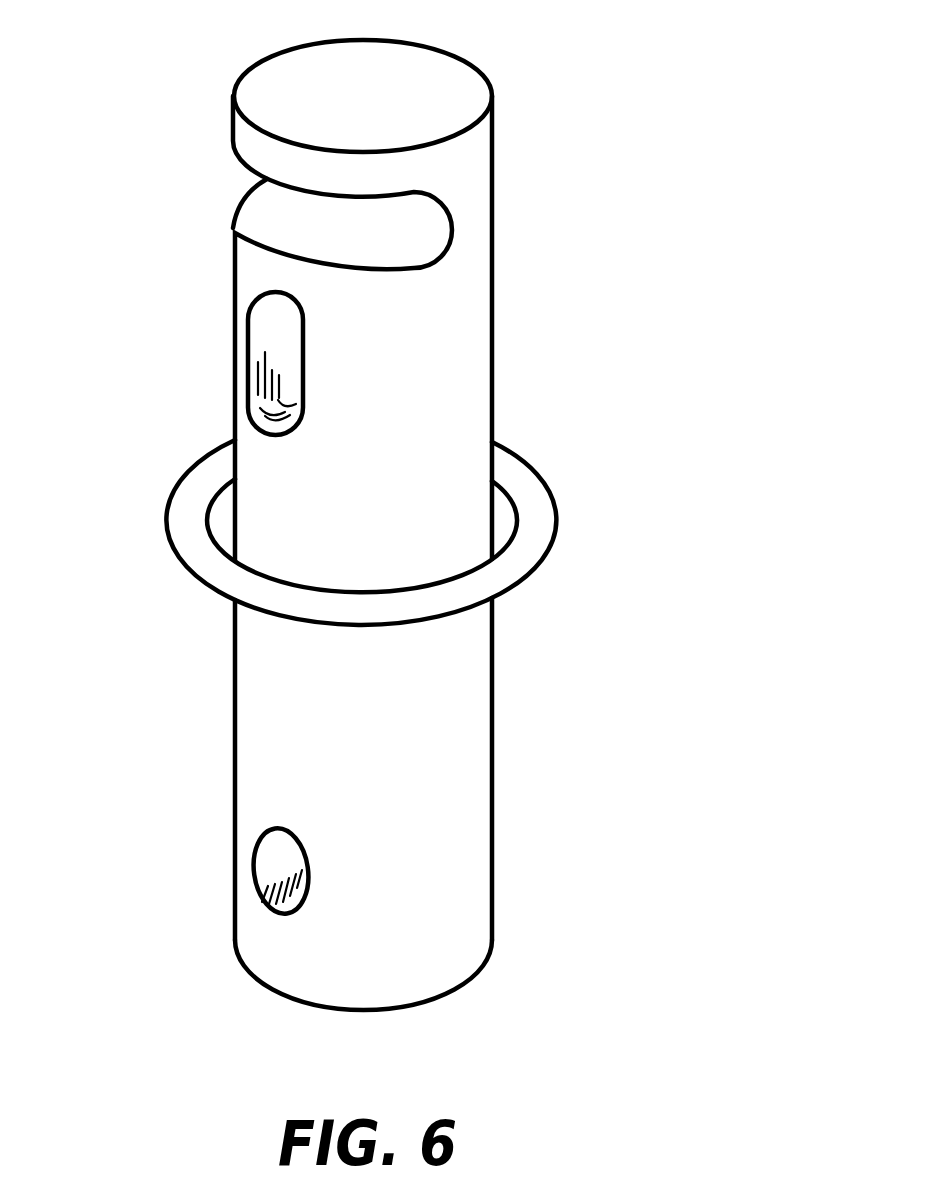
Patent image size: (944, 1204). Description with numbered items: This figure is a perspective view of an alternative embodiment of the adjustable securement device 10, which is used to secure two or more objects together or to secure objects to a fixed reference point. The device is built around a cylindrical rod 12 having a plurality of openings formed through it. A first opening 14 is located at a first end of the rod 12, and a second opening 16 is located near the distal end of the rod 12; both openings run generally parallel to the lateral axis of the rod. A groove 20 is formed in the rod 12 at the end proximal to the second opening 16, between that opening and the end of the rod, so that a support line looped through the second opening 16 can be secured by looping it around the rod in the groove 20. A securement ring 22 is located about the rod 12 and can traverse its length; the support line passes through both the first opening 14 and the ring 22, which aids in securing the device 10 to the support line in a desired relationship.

The adjustable securement device 10 is at (429, 525).
The rod 12 is at (448, 755).
The first opening 14 is at (273, 862).
The second opening 16 is at (265, 338).
The groove 20 is at (280, 210).
The securement ring 22 is at (532, 532).